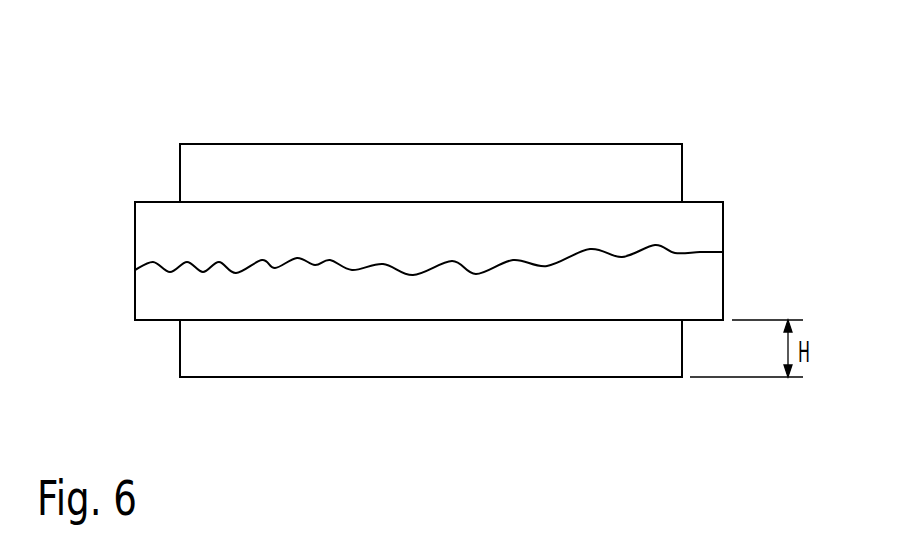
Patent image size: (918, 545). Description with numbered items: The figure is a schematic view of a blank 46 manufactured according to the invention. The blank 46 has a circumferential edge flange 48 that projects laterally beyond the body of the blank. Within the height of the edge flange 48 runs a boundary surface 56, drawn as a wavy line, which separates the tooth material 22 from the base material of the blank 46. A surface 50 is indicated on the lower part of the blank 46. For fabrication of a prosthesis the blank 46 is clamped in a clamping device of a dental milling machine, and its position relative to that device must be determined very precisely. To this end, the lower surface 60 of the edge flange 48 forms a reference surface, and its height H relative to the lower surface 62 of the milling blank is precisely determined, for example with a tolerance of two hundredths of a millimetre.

The tooth material 22 is at (273, 360).
The blank 46 is at (540, 228).
The circumferential edge flange 48 is at (703, 228).
The contact surface 50 is at (444, 365).
The boundary surface 56 is at (297, 258).
The lower surface of the edge flange 60 is at (702, 320).
The lower surface of the milling blank 62 is at (527, 378).